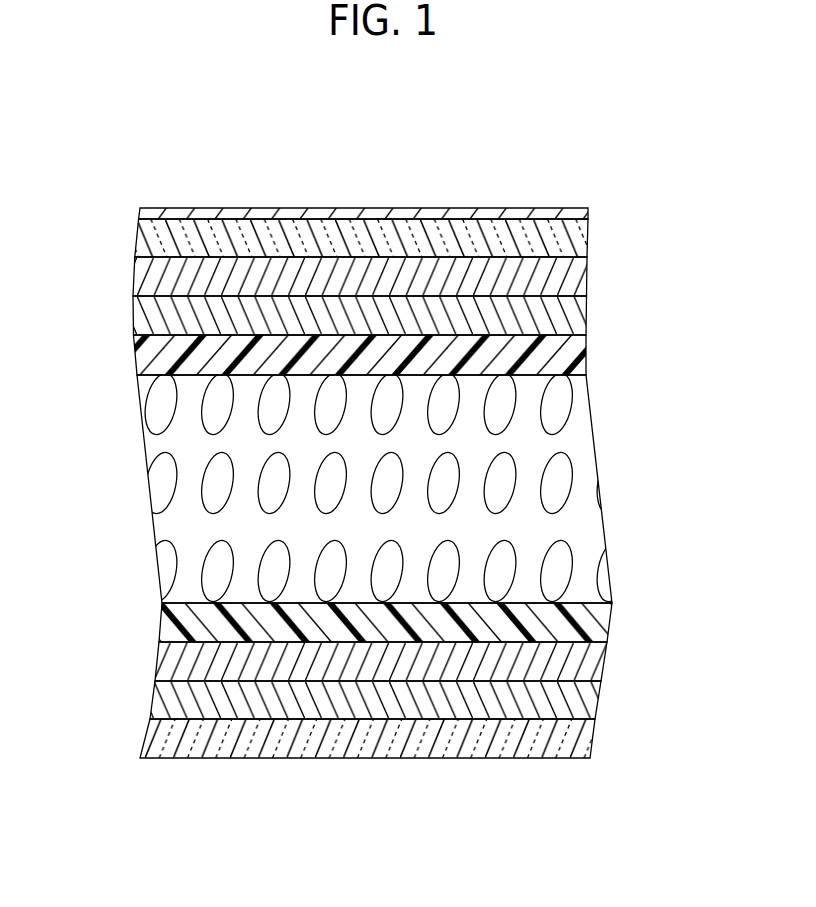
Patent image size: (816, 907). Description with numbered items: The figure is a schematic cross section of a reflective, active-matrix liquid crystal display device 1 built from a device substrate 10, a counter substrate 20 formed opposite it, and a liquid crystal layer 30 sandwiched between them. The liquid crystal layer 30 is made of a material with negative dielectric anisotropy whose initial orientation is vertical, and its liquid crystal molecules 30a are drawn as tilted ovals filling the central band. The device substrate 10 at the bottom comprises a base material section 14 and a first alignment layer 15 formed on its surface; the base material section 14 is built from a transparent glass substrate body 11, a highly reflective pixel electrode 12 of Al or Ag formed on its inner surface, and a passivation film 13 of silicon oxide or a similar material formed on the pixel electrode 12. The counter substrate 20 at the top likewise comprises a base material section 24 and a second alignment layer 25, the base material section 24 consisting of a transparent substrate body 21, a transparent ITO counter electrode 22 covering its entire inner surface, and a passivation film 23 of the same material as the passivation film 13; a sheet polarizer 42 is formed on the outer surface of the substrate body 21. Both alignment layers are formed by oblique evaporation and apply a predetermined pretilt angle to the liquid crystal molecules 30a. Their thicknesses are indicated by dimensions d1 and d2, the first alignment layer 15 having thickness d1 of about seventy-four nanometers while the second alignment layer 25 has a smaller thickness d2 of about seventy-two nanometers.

The liquid crystal display device 1 is at (515, 150).
The device substrate 10 is at (456, 679).
The substrate body 11 is at (408, 738).
The pixel electrode 12 is at (598, 697).
The passivation film 13 is at (601, 658).
The base material section 14 is at (429, 699).
The first alignment layer 15 is at (610, 620).
The counter substrate 20 is at (442, 286).
The substrate body 21 is at (588, 238).
The counter electrode 22 is at (587, 277).
The passivation film 23 is at (392, 315).
The base material section 24 is at (418, 266).
The second alignment layer 25 is at (584, 355).
The liquid crystal layer 30 is at (369, 488).
The liquid crystal molecules 30a is at (158, 476).
The sheet polarizer 42 is at (588, 210).
The thickness of first alignment layer d1 is at (137, 602).
The thickness of second alignment layer d2 is at (135, 335).